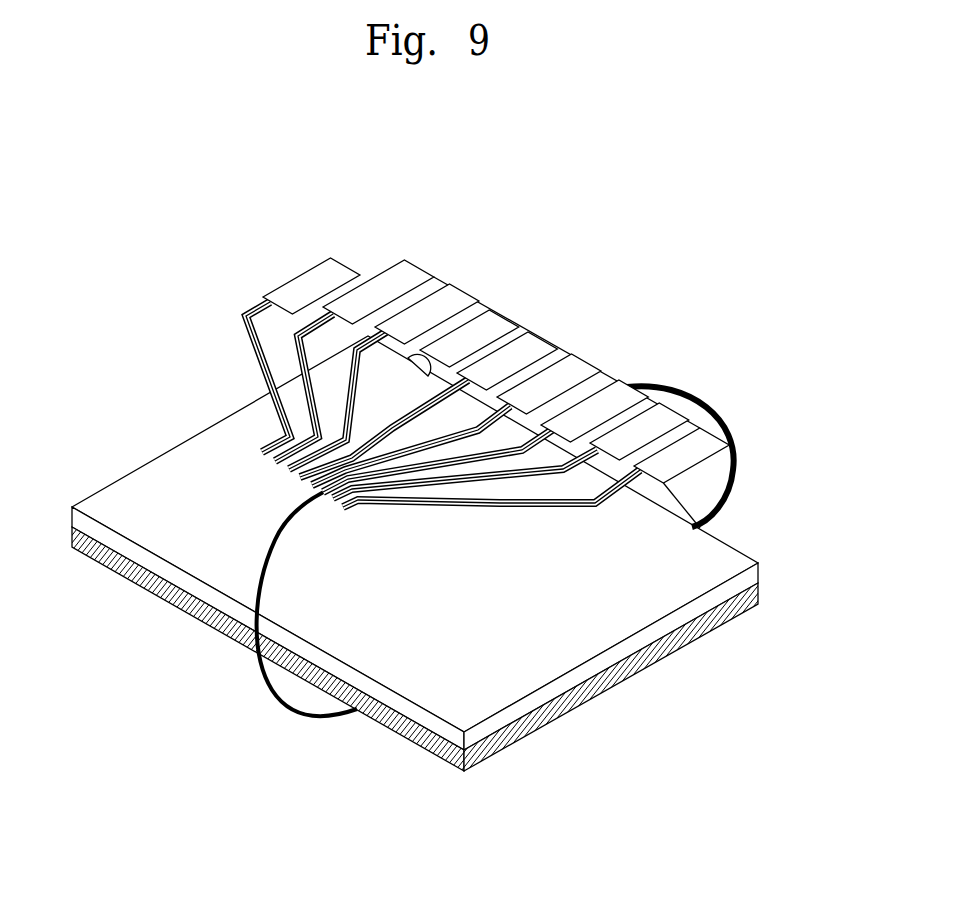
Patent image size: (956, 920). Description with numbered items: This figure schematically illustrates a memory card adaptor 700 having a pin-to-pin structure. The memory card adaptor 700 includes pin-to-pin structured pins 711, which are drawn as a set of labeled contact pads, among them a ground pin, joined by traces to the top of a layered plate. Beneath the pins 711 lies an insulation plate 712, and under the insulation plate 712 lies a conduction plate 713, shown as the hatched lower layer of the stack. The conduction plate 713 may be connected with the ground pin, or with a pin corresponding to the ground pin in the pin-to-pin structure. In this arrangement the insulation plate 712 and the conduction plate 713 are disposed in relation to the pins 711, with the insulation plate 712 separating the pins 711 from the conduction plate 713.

The memory card adaptor 700 is at (715, 183).
The pins 711 is at (522, 295).
The insulation plate 712 is at (757, 574).
The conduction plate 713 is at (757, 594).